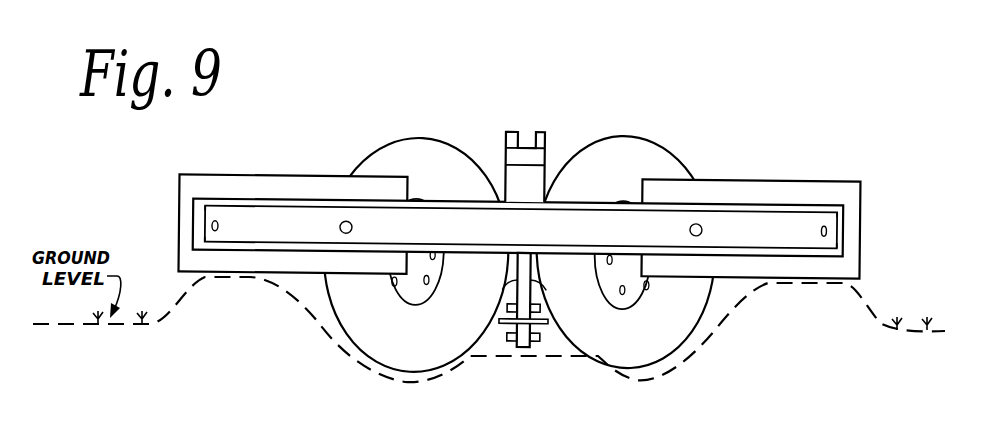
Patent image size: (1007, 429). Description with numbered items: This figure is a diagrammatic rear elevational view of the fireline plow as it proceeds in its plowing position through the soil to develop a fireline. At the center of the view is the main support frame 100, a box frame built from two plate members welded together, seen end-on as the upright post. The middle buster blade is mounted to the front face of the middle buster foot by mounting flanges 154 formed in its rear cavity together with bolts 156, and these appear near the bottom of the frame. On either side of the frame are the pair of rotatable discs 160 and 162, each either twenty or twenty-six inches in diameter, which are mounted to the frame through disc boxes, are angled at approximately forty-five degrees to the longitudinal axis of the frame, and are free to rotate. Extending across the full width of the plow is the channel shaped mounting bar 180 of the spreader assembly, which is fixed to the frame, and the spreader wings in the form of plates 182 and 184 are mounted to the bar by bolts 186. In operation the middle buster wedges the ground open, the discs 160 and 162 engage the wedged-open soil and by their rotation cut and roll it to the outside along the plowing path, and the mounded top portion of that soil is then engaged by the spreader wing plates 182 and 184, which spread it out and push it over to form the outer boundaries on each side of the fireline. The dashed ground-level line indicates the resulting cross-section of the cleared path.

The main support frame 100 is at (538, 177).
The mounting flanges 154 is at (547, 325).
The bolts 156 is at (508, 337).
The rotatable disc 160 is at (626, 174).
The rotatable disc 162 is at (448, 174).
The channel shaped mounting bar 180 is at (506, 236).
The spreader wing plate 182 is at (708, 190).
The spreader wing plate 184 is at (283, 176).
The bolts 186 is at (830, 230).